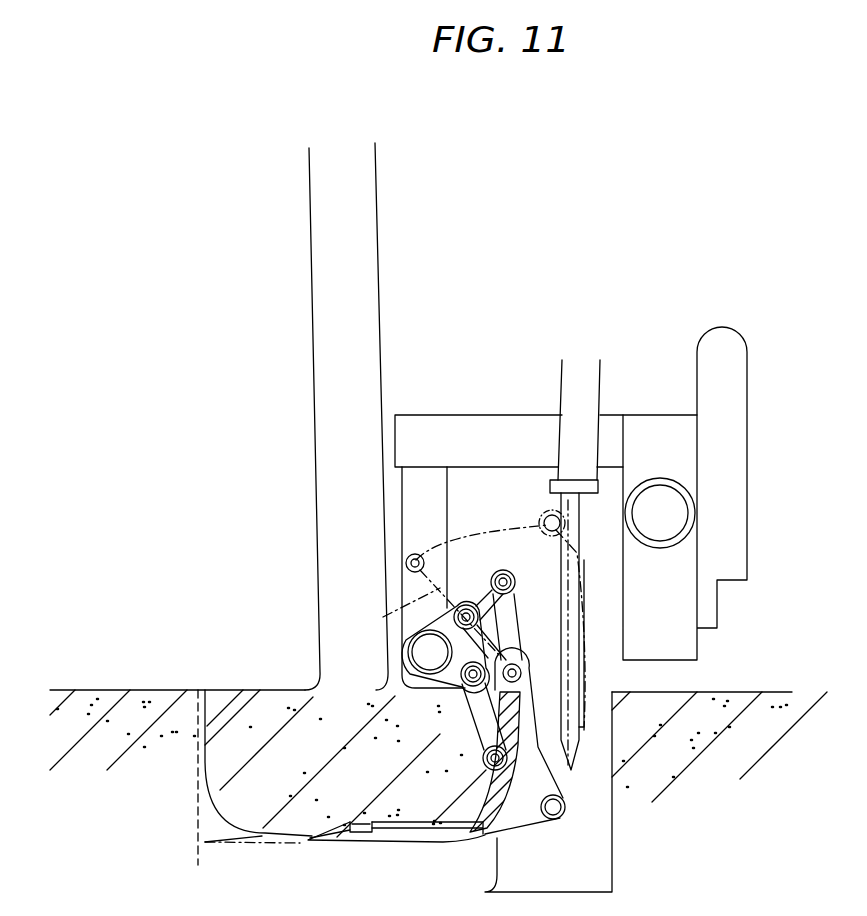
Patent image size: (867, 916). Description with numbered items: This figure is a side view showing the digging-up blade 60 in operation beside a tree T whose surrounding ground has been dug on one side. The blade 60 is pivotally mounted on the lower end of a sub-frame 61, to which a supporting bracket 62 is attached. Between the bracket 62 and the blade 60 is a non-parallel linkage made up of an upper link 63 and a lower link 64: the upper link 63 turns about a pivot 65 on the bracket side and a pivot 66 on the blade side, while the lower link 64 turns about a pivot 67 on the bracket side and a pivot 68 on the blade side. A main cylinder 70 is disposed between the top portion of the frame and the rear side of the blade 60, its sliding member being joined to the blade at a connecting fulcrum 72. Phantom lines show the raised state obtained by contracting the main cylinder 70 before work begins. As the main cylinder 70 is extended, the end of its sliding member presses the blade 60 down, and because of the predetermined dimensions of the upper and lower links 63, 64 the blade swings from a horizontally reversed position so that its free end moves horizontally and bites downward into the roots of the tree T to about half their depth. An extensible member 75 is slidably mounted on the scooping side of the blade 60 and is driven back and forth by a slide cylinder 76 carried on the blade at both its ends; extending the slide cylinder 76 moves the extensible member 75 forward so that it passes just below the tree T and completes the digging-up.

The tree T is at (320, 268).
The digging-up blade 60 is at (472, 550).
The sub-frame 61 is at (486, 432).
The supporting bracket 62 is at (425, 648).
The upper link 63 is at (400, 605).
The lower link 64 is at (503, 618).
The pivot of the upper link 65 is at (476, 590).
The pivot of the upper link 66 is at (410, 556).
The pivot of the lower link 67 is at (463, 687).
The pivot of the lower link 68 is at (507, 778).
The main cylinder 70 is at (588, 384).
The connecting fulcrum 72 is at (557, 818).
The extensible member 75 is at (258, 844).
The slide cylinder 76 is at (373, 822).